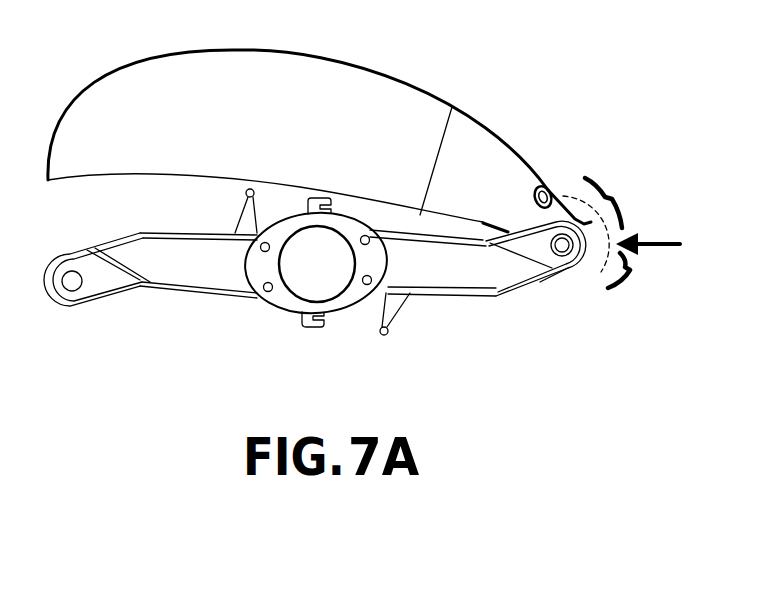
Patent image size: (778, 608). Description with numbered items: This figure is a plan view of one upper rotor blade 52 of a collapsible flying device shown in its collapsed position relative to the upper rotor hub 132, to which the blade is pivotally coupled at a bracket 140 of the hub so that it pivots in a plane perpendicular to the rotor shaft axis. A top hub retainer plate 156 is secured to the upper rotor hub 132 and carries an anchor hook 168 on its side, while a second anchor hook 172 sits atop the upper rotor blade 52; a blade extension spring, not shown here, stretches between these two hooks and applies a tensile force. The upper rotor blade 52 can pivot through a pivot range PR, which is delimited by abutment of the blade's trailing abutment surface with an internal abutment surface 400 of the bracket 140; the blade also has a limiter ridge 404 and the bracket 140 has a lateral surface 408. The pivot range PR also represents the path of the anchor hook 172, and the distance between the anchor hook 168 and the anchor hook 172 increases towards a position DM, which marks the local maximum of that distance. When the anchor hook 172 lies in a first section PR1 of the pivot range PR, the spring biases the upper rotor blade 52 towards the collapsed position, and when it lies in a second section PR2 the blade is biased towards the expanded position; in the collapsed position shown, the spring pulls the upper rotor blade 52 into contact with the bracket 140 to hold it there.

The upper rotor blade 52 is at (117, 80).
The upper rotor hub 132 is at (490, 295).
The bracket 140 is at (540, 253).
The top hub retainer plate 156 is at (284, 298).
The anchor hook 168 is at (317, 200).
The anchor hook 172 is at (543, 186).
The internal abutment surface 400 is at (478, 233).
The limiter ridge 404 is at (591, 226).
The lateral surface 408 is at (558, 288).
The pivot range PR is at (571, 196).
The first section of the pivot range PR1 is at (612, 200).
The second section of the pivot range PR2 is at (625, 270).
The position of local maximum distance DM is at (666, 243).